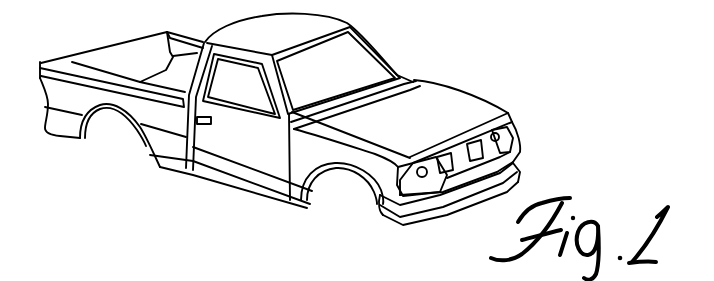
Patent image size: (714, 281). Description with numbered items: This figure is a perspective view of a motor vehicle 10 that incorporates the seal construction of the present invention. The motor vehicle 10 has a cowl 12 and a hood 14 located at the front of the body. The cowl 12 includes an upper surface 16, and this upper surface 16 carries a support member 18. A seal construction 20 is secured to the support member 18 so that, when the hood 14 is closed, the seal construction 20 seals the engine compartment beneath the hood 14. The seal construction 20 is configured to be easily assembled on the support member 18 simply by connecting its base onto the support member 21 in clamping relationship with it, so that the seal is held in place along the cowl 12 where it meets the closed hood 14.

The motor vehicle 10 is at (487, 87).
The cowl 12 is at (407, 78).
The hood 14 is at (493, 107).
The upper surface 16 is at (336, 121).
The support member 18 is at (313, 137).
The seal construction 20 is at (347, 110).
The support member 21 is at (350, 128).